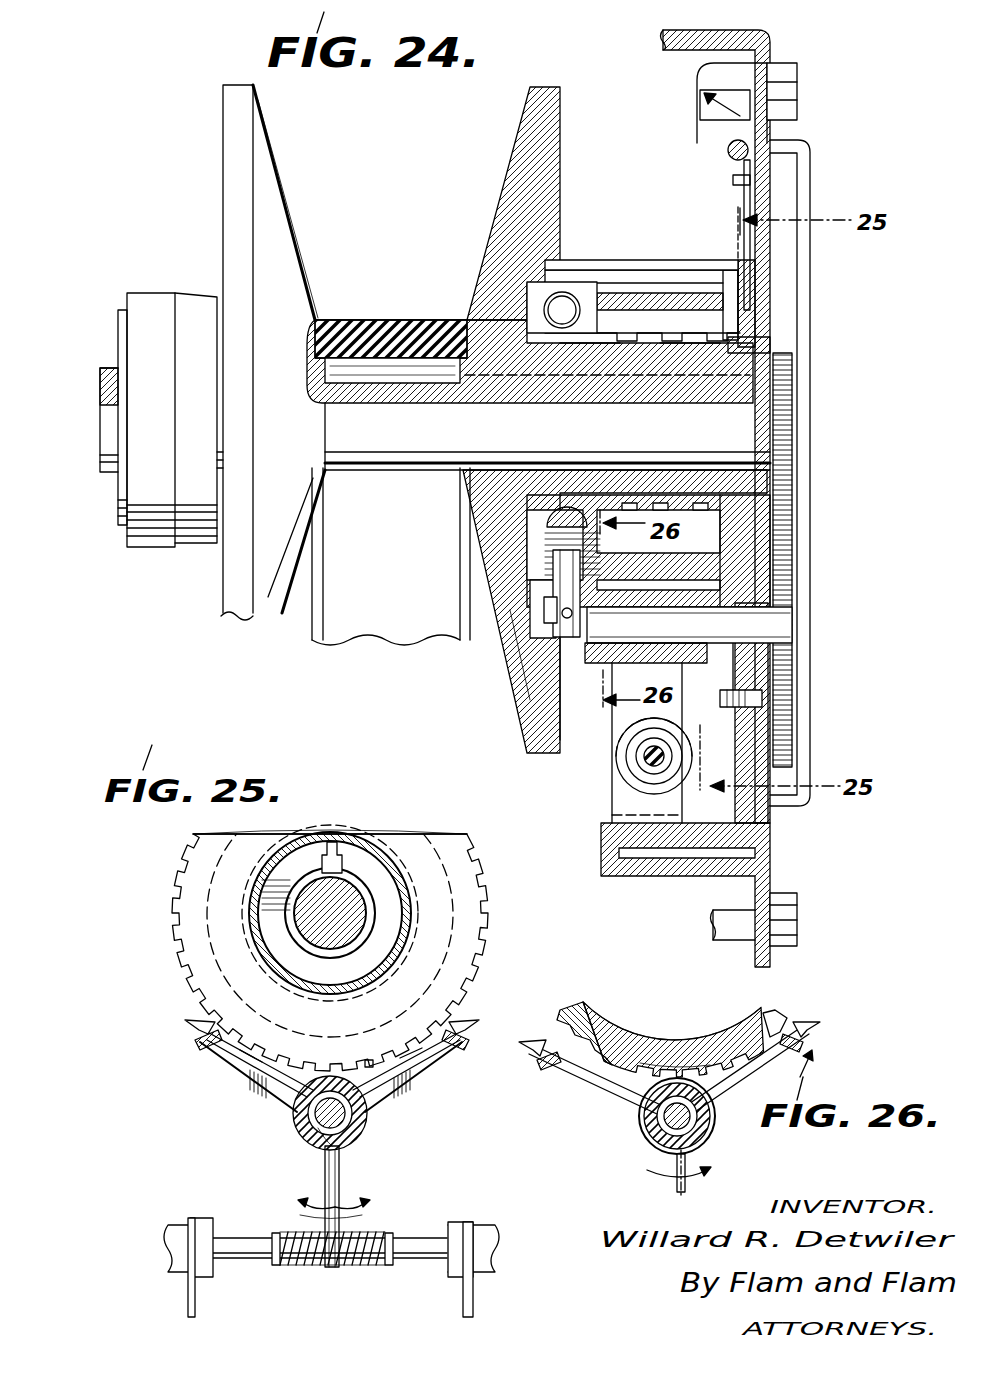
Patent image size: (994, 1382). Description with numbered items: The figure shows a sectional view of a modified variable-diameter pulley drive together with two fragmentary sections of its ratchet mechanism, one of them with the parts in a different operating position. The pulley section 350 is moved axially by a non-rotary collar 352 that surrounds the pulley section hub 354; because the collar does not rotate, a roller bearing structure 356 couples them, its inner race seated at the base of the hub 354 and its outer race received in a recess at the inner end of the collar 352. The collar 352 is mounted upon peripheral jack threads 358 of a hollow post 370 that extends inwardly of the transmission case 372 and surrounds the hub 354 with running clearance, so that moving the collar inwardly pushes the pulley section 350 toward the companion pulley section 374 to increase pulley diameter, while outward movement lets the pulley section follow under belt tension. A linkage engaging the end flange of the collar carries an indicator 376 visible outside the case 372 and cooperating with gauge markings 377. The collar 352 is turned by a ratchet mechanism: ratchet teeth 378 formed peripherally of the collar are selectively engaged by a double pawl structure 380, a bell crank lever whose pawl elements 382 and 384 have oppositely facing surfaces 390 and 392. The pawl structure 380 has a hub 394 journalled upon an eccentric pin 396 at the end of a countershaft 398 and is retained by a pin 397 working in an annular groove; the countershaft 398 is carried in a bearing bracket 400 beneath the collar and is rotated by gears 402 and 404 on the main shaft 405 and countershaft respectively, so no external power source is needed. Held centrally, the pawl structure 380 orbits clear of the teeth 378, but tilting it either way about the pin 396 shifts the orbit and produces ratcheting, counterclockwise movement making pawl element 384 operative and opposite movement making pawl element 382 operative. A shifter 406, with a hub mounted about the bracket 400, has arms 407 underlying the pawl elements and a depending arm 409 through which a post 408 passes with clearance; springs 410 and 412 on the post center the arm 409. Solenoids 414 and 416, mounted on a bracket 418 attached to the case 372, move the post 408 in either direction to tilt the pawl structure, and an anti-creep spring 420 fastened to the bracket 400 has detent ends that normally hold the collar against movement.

In FIG. 24, the pulley section 350 is at (490, 315).
In FIG. 24, the collar 352 is at (617, 277).
In FIG. 25, the collar 352 is at (196, 894).
In FIG. 26, the collar 352 is at (712, 1030).
In FIG. 24, the pulley section hub 354 is at (587, 350).
In FIG. 25, the pulley section hub 354 is at (381, 883).
In FIG. 24, the roller bearing structure 356 is at (547, 287).
In FIG. 24, the jack threads 358 is at (687, 340).
In FIG. 24, the hollow post 370 is at (682, 350).
In FIG. 25, the hollow post 370 is at (297, 841).
In FIG. 24, the transmission case 372 is at (763, 297).
In FIG. 24, the companion pulley section 374 is at (273, 170).
In FIG. 24, the indicator 376 is at (713, 110).
In FIG. 24, the gauge markings 377 is at (723, 80).
In FIG. 24, the ratchet teeth 378 is at (683, 263).
In FIG. 25, the ratchet teeth 378 is at (487, 893).
In FIG. 26, the ratchet teeth 378 is at (770, 1020).
In FIG. 24, the double pawl structure 380 is at (558, 579).
In FIG. 25, the double pawl structure 380 is at (246, 1085).
In FIG. 25, the pawl element 382 is at (199, 1035).
In FIG. 26, the pawl element 382 is at (577, 1075).
In FIG. 25, the pawl element 384 is at (465, 1028).
In FIG. 26, the pawl element 384 is at (818, 1030).
In FIG. 25, the surface 390 is at (259, 1069).
In FIG. 25, the surface 392 is at (402, 1077).
In FIG. 24, the hub 394 is at (548, 664).
In FIG. 25, the hub 394 is at (310, 1114).
In FIG. 24, the eccentric pin 396 is at (550, 612).
In FIG. 25, the eccentric pin 396 is at (352, 1111).
In FIG. 24, the pin 397 is at (576, 645).
In FIG. 24, the countershaft 398 is at (752, 623).
In FIG. 25, the countershaft 398 is at (346, 1135).
In FIG. 24, the bearing bracket 400 is at (735, 590).
In FIG. 25, the bearing bracket 400 is at (318, 1128).
In FIG. 24, the gear 402 is at (792, 394).
In FIG. 24, the gear 404 is at (792, 700).
In FIG. 24, the main shaft 405 is at (541, 524).
In FIG. 24, the shifter 406 is at (636, 724).
In FIG. 25, the shifter 406 is at (343, 890).
In FIG. 26, the shifter 406 is at (673, 1181).
In FIG. 25, the arms 407 is at (220, 1051).
In FIG. 24, the post 408 is at (700, 770).
In FIG. 25, the post 408 is at (420, 1248).
In FIG. 25, the depending arm 409 is at (325, 1220).
In FIG. 25, the spring 410 is at (276, 1265).
In FIG. 25, the spring 412 is at (345, 1265).
In FIG. 25, the solenoid 414 is at (485, 1235).
In FIG. 25, the solenoid 416 is at (162, 1228).
In FIG. 24, the bracket 418 is at (622, 815).
In FIG. 25, the bracket 418 is at (188, 1300).
In FIG. 24, the anti-creep spring 420 is at (637, 598).
In FIG. 25, the anti-creep spring 420 is at (367, 1060).
In FIG. 26, the anti-creep spring 420 is at (625, 1062).